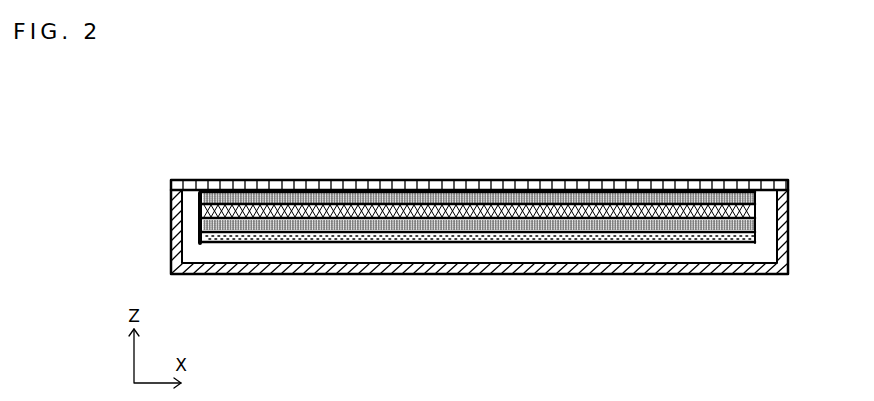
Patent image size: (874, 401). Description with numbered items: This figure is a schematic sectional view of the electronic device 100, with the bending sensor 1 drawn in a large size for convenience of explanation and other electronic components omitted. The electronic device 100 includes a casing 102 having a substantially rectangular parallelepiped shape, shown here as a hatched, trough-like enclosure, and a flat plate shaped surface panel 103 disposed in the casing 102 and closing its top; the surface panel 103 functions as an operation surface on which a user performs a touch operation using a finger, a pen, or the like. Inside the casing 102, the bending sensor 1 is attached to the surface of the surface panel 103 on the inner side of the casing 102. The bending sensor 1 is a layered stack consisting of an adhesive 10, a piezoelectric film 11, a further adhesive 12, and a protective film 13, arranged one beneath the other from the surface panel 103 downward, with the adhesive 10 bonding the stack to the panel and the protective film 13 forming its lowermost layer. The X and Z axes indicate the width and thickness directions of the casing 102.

The bending sensor 1 is at (383, 245).
The adhesive 10 is at (718, 192).
The piezoelectric film 11 is at (757, 206).
The adhesive 12 is at (755, 228).
The protective film 13 is at (715, 244).
The electronic device 100 is at (783, 157).
The casing 102 is at (655, 278).
The surface panel 103 is at (348, 180).